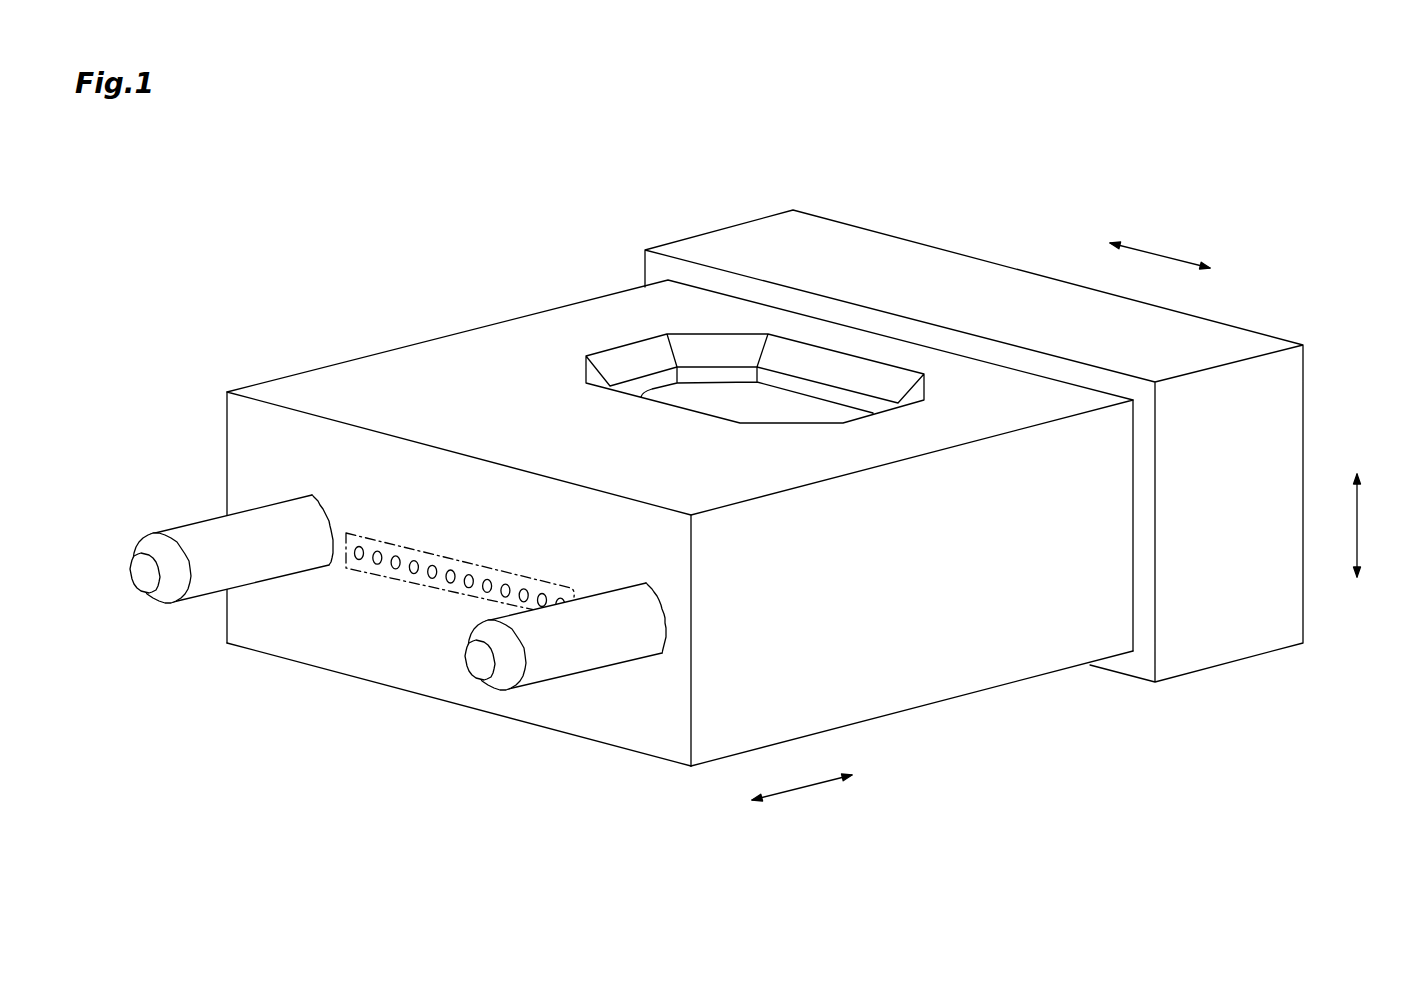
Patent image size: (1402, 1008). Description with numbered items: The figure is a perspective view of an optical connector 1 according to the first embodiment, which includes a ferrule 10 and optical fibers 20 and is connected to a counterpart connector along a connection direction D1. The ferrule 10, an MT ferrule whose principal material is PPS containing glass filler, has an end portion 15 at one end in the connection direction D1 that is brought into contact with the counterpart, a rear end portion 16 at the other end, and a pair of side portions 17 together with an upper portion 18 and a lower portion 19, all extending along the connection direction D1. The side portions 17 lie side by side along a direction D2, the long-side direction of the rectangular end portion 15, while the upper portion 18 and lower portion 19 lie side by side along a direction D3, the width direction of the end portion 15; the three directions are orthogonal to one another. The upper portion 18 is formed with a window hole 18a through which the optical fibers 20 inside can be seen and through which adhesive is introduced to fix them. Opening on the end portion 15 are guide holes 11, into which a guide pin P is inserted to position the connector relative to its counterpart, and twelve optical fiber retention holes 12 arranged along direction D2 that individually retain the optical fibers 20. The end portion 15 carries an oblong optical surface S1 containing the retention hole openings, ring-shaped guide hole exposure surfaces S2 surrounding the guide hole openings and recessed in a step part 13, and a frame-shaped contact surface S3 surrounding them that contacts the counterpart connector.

The optical connector 1 is at (1023, 162).
The ferrule 10 is at (562, 304).
The guide hole 11 is at (327, 530).
The optical fiber retention hole 12 is at (451, 579).
The step part 13 is at (264, 502).
The end portion 15 is at (247, 654).
The rear end portion 16 is at (1305, 408).
The side portion 17 is at (930, 672).
The upper portion 18 is at (514, 332).
The window hole 18a is at (792, 384).
The lower portion 19 is at (897, 713).
The optical fiber 20 is at (414, 568).
The guide pin P is at (210, 585).
The optical surface S1 is at (557, 584).
The guide hole exposure surface S2 is at (325, 577).
The contact surface S3 is at (390, 458).
The connection direction D1 is at (802, 799).
The direction D2 is at (1160, 246).
The direction D3 is at (1378, 525).